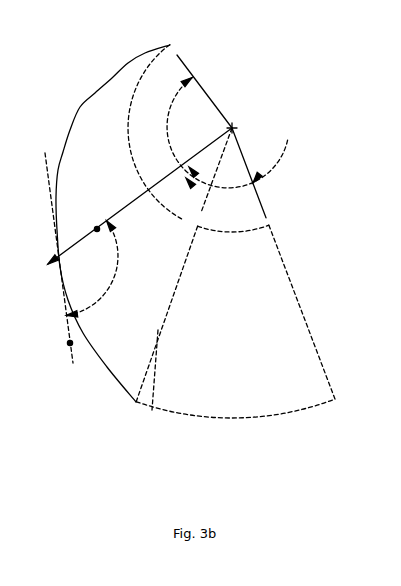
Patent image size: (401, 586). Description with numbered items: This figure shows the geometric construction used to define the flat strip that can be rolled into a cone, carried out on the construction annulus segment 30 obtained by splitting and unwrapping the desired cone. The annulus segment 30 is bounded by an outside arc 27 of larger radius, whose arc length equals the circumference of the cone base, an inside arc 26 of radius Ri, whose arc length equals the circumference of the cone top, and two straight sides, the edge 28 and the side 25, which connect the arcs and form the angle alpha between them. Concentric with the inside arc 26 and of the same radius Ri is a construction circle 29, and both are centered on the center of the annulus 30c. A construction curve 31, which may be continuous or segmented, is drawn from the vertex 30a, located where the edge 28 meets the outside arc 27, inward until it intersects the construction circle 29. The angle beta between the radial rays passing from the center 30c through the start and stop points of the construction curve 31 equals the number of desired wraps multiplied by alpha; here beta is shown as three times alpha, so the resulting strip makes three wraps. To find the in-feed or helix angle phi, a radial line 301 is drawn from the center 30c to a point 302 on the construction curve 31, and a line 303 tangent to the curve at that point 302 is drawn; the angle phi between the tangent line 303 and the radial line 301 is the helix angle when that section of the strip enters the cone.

The construction curve 31 is at (67, 140).
The radial line 301 is at (96, 228).
The point on the construction curve 302 is at (48, 266).
The tangent line 303 is at (69, 345).
The construction circle 29 is at (139, 172).
The center of the annulus 30c is at (238, 121).
The inside arc radius Ri is at (203, 72).
The inside arc 26 is at (230, 230).
The straight side 25 is at (307, 327).
The vertex 30a is at (131, 402).
The edge 28 is at (152, 410).
The outside arc 27 is at (210, 418).
The construction annulus segment 30 is at (237, 383).